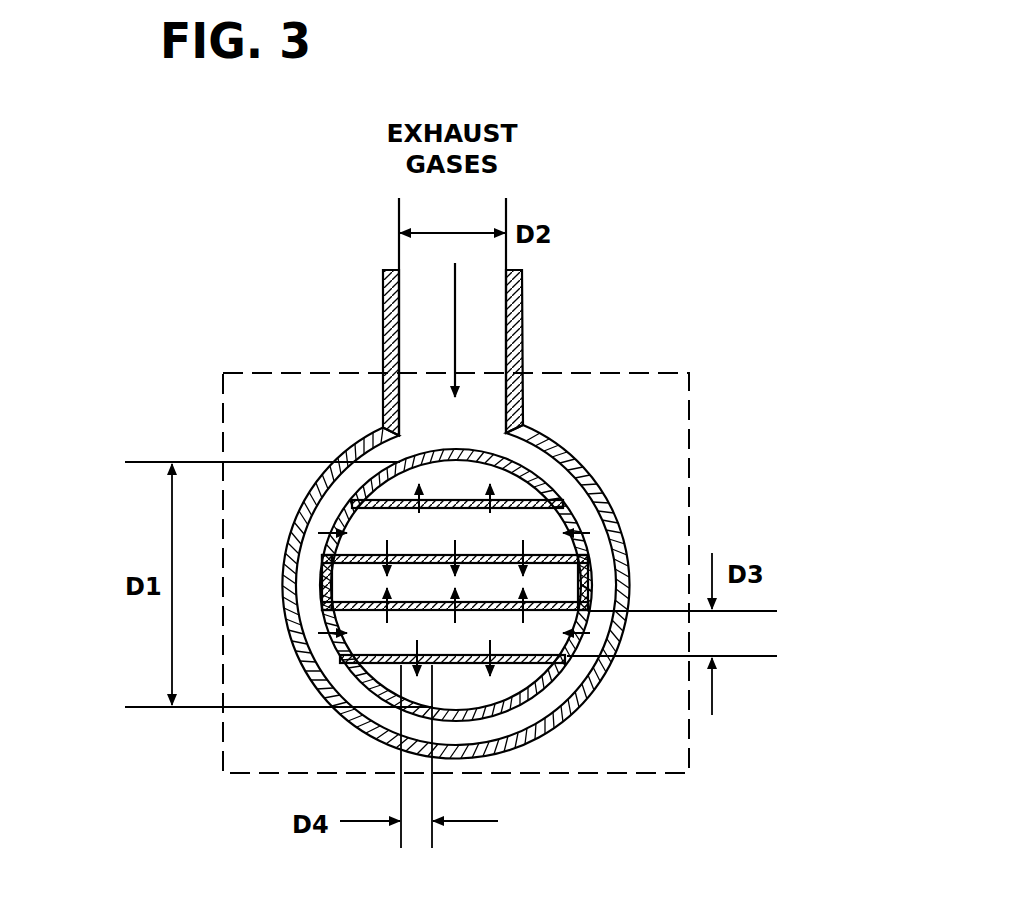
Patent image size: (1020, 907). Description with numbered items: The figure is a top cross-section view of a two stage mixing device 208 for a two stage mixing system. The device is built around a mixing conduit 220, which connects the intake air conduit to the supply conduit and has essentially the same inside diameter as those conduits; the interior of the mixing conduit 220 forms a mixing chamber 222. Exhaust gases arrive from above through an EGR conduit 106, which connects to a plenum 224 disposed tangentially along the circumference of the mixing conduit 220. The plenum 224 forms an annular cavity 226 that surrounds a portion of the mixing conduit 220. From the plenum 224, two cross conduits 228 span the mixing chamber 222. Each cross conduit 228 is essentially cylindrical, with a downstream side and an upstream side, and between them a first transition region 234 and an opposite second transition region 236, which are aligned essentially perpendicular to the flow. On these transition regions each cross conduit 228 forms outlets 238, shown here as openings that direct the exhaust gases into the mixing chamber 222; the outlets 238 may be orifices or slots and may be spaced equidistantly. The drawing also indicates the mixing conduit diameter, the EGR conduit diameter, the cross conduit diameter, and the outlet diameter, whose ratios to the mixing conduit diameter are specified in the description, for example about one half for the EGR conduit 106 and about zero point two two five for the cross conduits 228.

The EGR conduit 106 is at (527, 324).
The two stage mixing device 208 is at (593, 373).
The mixing conduit 220 is at (565, 688).
The mixing chamber 222 is at (507, 494).
The plenum 224 is at (561, 621).
The annular cavity 226 is at (534, 689).
The cross conduit 228 is at (358, 522).
The first transition region 234 is at (397, 503).
The second transition region 236 is at (573, 562).
The outlets 238 is at (520, 555).